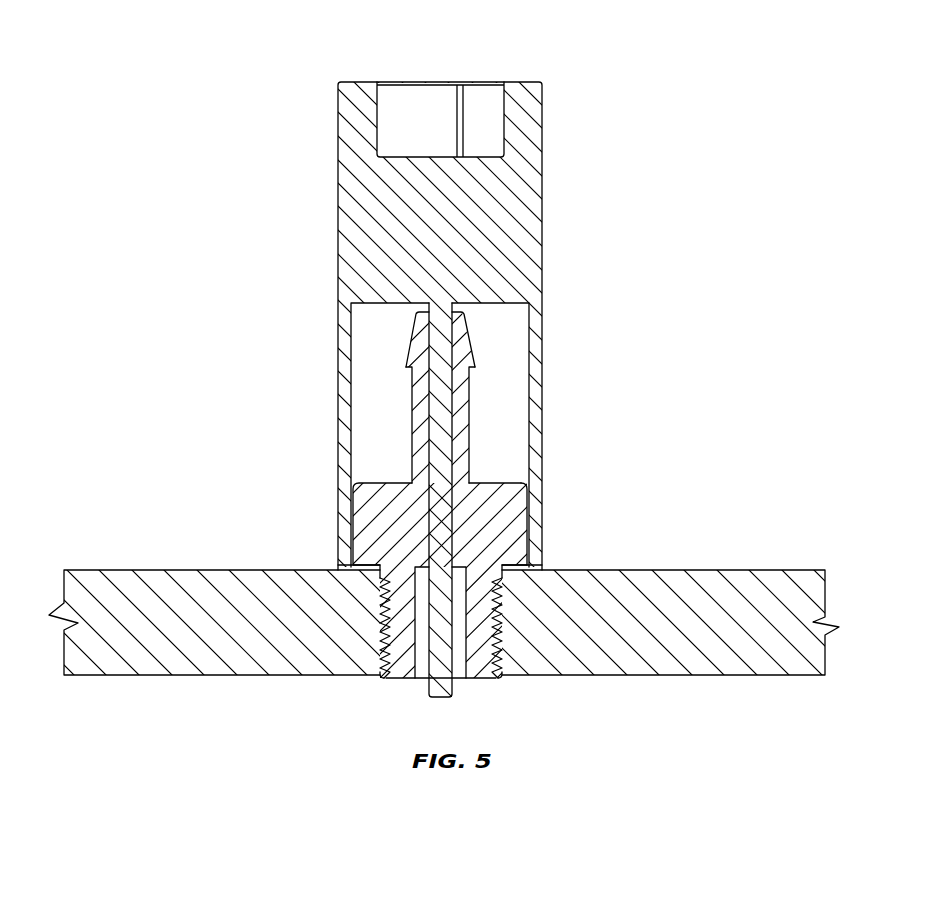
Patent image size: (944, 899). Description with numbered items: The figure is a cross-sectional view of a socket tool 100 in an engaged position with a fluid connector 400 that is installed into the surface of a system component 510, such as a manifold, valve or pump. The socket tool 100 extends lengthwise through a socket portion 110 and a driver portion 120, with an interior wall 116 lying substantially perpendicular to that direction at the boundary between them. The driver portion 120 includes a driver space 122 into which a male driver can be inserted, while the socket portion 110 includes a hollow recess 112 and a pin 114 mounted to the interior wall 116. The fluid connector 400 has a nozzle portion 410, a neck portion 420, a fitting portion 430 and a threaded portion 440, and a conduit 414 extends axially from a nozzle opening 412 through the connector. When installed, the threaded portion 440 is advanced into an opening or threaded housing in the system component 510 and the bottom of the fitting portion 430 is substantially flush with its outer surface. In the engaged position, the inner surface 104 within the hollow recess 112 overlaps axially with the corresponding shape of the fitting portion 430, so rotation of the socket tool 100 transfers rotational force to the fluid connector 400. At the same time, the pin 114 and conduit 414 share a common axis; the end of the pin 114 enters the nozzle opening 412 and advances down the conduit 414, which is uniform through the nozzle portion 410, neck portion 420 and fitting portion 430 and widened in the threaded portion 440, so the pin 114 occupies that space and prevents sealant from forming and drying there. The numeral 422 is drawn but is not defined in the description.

The socket tool 100 is at (352, 82).
The inner surface 104 is at (524, 432).
The socket portion 110 is at (313, 283).
The hollow recess 112 is at (511, 349).
The pin 114 is at (440, 699).
The interior wall 116 is at (516, 322).
The driver portion 120 is at (313, 82).
The driver space 122 is at (484, 114).
The fluid connector 400 is at (486, 512).
The nozzle portion 410 is at (406, 367).
The nozzle opening 412 is at (462, 313).
The conduit 414 is at (455, 452).
The neck portion 420 is at (411, 418).
The second arm shank 422 is at (474, 369).
The fitting portion 430 is at (530, 528).
The threaded portion 440 is at (503, 652).
The system component 510 is at (742, 571).